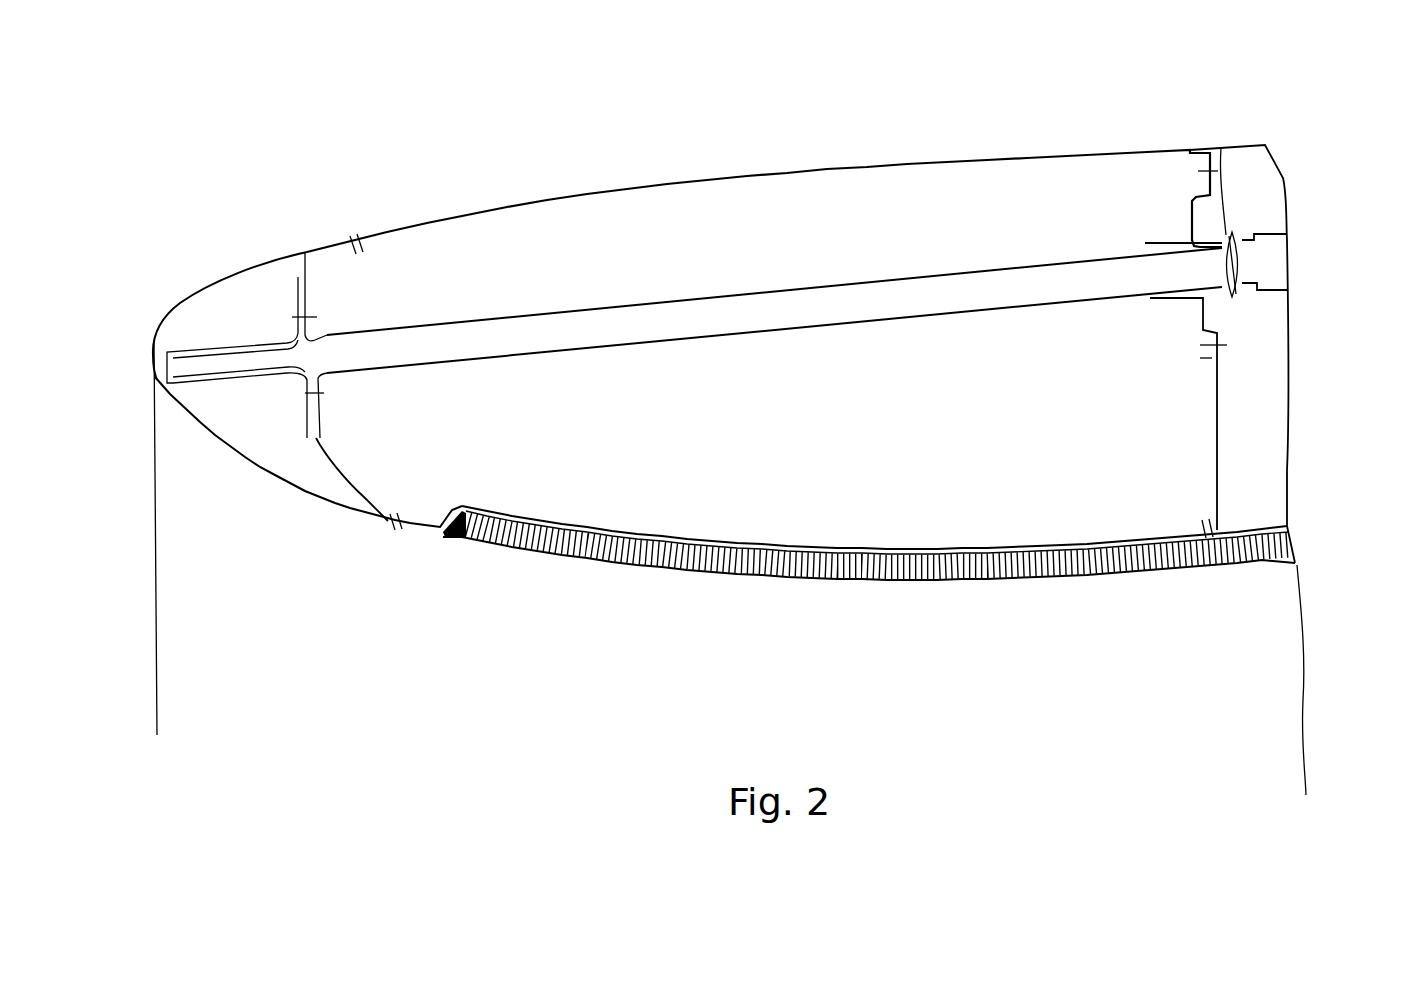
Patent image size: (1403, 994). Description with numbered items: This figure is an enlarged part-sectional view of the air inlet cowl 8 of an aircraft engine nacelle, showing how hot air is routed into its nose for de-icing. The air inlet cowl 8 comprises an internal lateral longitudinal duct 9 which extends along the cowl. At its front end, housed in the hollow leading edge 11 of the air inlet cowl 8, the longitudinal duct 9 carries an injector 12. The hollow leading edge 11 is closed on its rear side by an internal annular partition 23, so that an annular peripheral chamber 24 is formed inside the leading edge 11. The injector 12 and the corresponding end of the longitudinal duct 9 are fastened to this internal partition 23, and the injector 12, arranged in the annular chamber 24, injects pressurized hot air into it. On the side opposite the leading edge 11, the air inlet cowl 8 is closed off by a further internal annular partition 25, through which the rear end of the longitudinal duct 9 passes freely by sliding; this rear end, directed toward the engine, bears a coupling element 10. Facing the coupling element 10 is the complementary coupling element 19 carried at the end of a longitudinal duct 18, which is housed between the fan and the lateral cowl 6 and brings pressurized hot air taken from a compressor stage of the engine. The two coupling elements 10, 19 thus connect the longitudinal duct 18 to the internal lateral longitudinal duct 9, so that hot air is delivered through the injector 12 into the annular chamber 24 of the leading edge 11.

The lateral cowl 6 is at (1250, 146).
The air inlet cowl 8 is at (496, 208).
The internal lateral longitudinal duct 9 is at (782, 312).
The coupling element 10 is at (1221, 148).
The hollow leading edge 11 is at (168, 307).
The injector 12 is at (218, 365).
The longitudinal duct 18 is at (1268, 266).
The complementary coupling element 19 is at (1234, 237).
The internal annular partition 23 is at (341, 462).
The annular peripheral chamber 24 is at (288, 440).
The internal annular partition 25 is at (1215, 423).